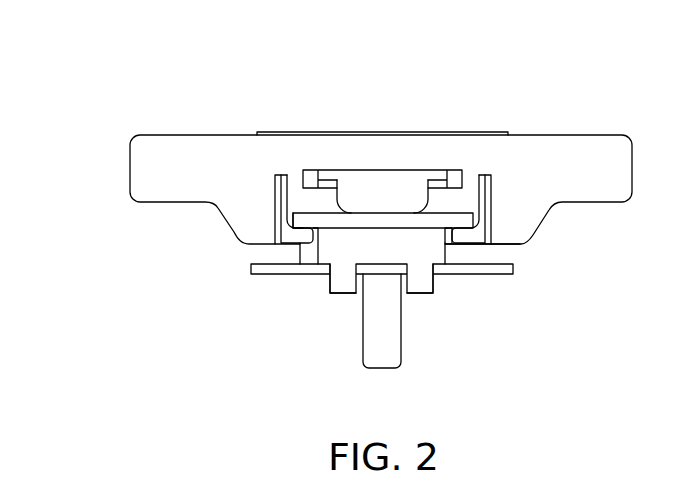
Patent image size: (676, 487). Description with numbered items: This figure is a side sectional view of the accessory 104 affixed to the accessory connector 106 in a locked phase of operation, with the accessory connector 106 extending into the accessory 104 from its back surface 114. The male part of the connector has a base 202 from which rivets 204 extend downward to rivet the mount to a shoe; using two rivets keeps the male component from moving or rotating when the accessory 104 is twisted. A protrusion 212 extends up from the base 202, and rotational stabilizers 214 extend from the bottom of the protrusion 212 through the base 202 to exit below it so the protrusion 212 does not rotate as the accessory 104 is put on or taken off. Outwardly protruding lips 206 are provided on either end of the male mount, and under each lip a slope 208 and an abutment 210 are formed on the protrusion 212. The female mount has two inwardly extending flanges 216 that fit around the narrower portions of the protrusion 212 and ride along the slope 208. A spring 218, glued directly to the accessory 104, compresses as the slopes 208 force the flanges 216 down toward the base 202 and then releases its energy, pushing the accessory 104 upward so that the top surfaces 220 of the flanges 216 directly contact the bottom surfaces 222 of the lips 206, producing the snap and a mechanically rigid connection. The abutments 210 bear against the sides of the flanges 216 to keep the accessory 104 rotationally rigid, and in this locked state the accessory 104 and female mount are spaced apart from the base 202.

The accessory 104 is at (148, 168).
The accessory connector 106 is at (252, 315).
The back surface 114 is at (252, 245).
The base 202 is at (508, 268).
The rivets 204 is at (376, 334).
The outwardly protruding lips 206 is at (463, 217).
The slope 208 is at (446, 230).
The abutment 210 is at (450, 245).
The protrusion 212 is at (410, 243).
The rotational stabilizers 214 is at (420, 281).
The inwardly extending flanges 216 is at (286, 233).
The spring 218 is at (360, 197).
The top surfaces 220 is at (460, 213).
The bottom surfaces 222 is at (298, 225).